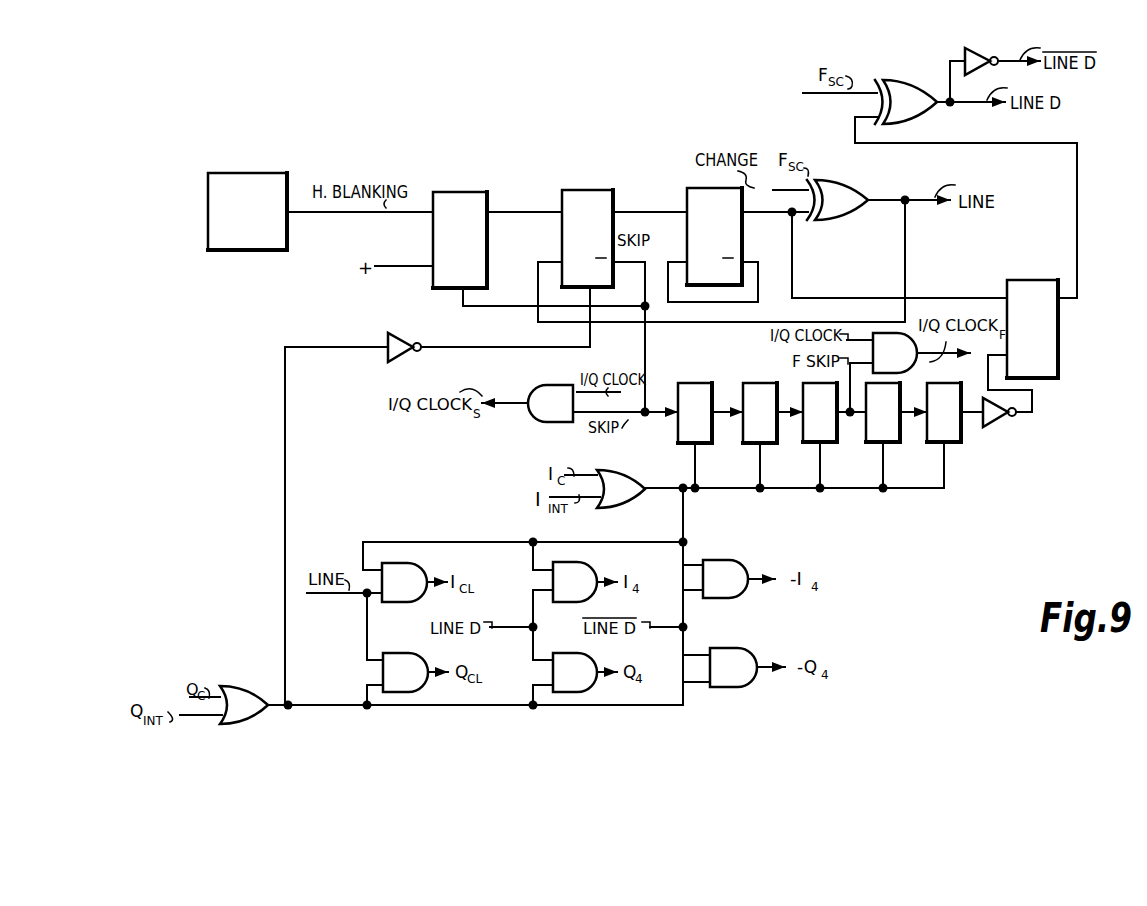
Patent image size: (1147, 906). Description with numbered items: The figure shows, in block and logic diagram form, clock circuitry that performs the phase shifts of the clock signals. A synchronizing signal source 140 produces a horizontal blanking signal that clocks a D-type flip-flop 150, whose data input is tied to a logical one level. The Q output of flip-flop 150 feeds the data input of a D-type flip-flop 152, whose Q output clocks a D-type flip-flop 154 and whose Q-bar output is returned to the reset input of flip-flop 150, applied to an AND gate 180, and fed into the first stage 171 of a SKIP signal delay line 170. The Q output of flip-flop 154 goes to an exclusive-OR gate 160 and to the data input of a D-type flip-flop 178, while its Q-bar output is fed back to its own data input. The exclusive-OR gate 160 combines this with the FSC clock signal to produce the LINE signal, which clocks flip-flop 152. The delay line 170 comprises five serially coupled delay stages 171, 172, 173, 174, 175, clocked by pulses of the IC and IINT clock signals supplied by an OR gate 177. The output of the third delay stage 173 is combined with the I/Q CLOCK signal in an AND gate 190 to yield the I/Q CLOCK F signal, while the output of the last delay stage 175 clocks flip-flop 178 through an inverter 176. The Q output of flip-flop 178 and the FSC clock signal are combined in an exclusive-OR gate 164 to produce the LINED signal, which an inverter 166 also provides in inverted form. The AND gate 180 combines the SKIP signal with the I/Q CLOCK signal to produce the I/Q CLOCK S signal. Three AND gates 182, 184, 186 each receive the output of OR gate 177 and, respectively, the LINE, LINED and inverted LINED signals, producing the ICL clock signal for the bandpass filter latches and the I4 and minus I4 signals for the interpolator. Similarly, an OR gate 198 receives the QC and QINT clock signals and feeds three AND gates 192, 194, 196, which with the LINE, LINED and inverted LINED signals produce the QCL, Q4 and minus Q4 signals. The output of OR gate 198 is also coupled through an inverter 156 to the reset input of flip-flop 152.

The synchronizing signal source 140 is at (287, 246).
The D-type flip-flop 150 is at (487, 240).
The D-type flip-flop 152 is at (600, 188).
The D-type flip-flop 154 is at (742, 238).
The inverter 156 is at (400, 333).
The exclusive-OR gate 160 is at (840, 187).
The exclusive-OR gate 164 is at (905, 80).
The inverter 166 is at (975, 48).
The SKIP signal delay line 170 is at (813, 475).
The first delay stage 171 is at (684, 448).
The second delay stage 172 is at (743, 445).
The third delay stage 173 is at (843, 444).
The fourth delay stage 174 is at (896, 448).
The last delay stage 175 is at (955, 447).
The inverter 176 is at (1000, 430).
The OR gate 177 is at (603, 470).
The D-type flip-flop 178 is at (1058, 335).
The AND gate 180 is at (555, 385).
The AND gate 182 is at (404, 582).
The AND gate 184 is at (575, 582).
The AND gate 186 is at (725, 579).
The AND gate 190 is at (915, 367).
The AND gate 192 is at (405, 672).
The AND gate 194 is at (575, 672).
The AND gate 196 is at (733, 667).
The OR gate 198 is at (252, 686).